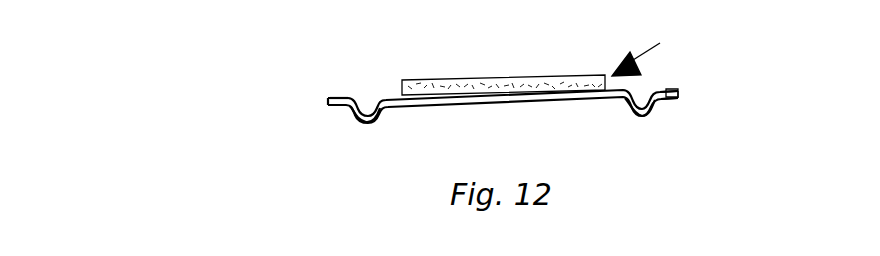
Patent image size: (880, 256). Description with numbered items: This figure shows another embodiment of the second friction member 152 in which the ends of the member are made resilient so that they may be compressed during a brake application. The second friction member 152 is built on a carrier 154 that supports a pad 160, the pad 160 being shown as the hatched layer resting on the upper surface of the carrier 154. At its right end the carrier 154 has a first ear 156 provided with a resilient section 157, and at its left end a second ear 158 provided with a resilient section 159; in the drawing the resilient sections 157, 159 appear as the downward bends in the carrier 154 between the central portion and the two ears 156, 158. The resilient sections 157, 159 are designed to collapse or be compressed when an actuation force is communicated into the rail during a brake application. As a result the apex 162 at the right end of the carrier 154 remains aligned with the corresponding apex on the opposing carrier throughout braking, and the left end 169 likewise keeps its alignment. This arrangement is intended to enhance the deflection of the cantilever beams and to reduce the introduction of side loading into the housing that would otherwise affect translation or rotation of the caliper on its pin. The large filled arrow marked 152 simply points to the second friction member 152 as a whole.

The second friction member 152 is at (655, 53).
The carrier 154 is at (483, 99).
The first ear 156 is at (764, 38).
The resilient section 157 is at (652, 108).
The second ear 158 is at (347, 23).
The resilient section 159 is at (357, 121).
The pad 160 is at (533, 88).
The apex 162 is at (775, 85).
The left edge 169 is at (328, 100).